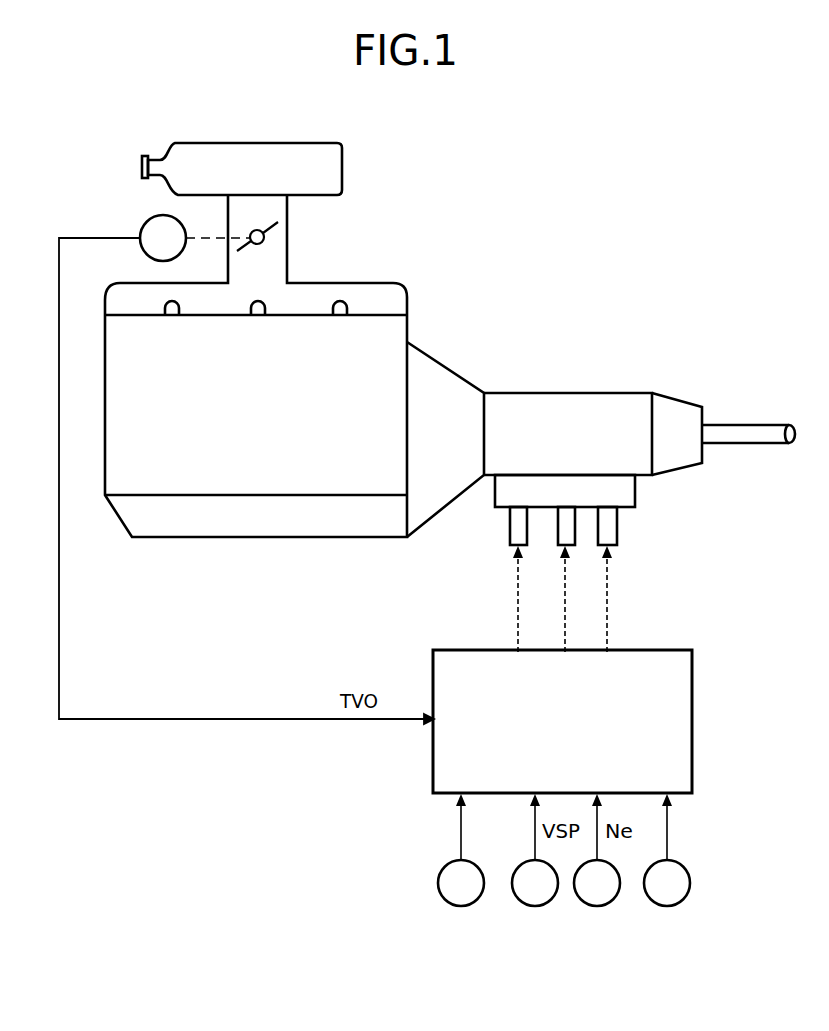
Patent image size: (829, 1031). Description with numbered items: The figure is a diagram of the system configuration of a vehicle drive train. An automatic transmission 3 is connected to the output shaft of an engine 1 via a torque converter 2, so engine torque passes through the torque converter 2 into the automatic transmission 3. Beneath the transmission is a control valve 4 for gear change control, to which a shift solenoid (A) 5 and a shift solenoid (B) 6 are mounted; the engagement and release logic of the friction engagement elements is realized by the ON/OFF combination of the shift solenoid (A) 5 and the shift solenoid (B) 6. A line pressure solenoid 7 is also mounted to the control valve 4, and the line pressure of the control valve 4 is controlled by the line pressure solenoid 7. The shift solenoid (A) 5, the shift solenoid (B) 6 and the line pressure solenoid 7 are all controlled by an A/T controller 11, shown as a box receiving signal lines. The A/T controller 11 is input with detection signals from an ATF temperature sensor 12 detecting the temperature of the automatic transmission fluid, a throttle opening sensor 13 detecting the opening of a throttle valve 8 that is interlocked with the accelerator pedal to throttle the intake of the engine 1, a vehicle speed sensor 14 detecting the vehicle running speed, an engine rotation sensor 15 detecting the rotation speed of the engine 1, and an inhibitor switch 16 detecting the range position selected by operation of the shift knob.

The engine 1 is at (306, 316).
The torque converter 2 is at (445, 358).
The automatic transmission 3 is at (553, 393).
The control valve 4 is at (637, 491).
The shift solenoid (A) 5 is at (620, 524).
The shift solenoid (B) 6 is at (578, 521).
The line pressure solenoid 7 is at (528, 525).
The throttle valve 8 is at (287, 233).
The A/T controller 11 is at (433, 765).
The ATF temperature sensor 12 is at (461, 906).
The throttle opening sensor 13 is at (140, 232).
The vehicle speed sensor 14 is at (535, 906).
The engine rotation sensor 15 is at (597, 906).
The inhibitor switch 16 is at (667, 906).